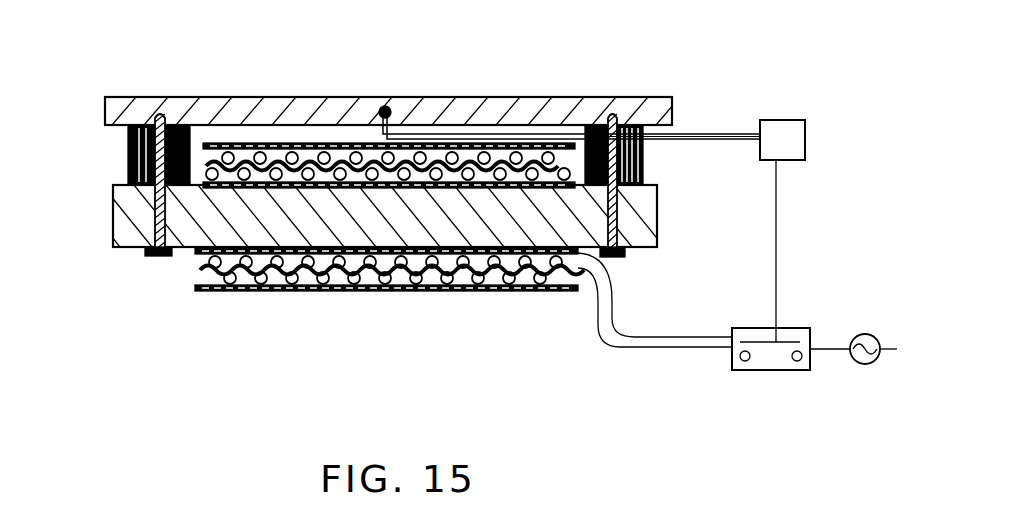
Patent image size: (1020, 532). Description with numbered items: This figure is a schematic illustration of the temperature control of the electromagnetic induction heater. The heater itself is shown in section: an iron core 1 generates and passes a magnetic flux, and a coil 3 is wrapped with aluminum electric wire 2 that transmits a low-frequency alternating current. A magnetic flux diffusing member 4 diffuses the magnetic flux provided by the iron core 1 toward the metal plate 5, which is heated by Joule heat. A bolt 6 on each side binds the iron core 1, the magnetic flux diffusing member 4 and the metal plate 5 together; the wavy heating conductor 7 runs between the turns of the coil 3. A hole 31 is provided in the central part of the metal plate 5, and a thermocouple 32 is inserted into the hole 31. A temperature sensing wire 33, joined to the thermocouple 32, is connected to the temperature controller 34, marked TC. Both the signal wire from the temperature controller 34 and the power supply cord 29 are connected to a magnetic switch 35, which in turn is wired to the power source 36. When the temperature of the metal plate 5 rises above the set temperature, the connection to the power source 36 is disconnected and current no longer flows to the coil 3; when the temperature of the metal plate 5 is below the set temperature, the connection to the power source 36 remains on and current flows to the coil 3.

The iron core 1 is at (660, 231).
The electric wire 2 is at (404, 282).
The coil 3 is at (389, 265).
The magnetic flux diffusing member 4 is at (128, 153).
The metal plate 5 is at (484, 97).
The bolt 6 is at (160, 257).
The heating wire 7 is at (440, 340).
The power supply cord 29 is at (658, 348).
The hole 31 is at (383, 100).
The thermocouple 32 is at (397, 100).
The temperature sensing wire 33 is at (720, 134).
The temperature controller 34 is at (797, 120).
The magnetic switch 35 is at (773, 371).
The power source 36 is at (863, 365).